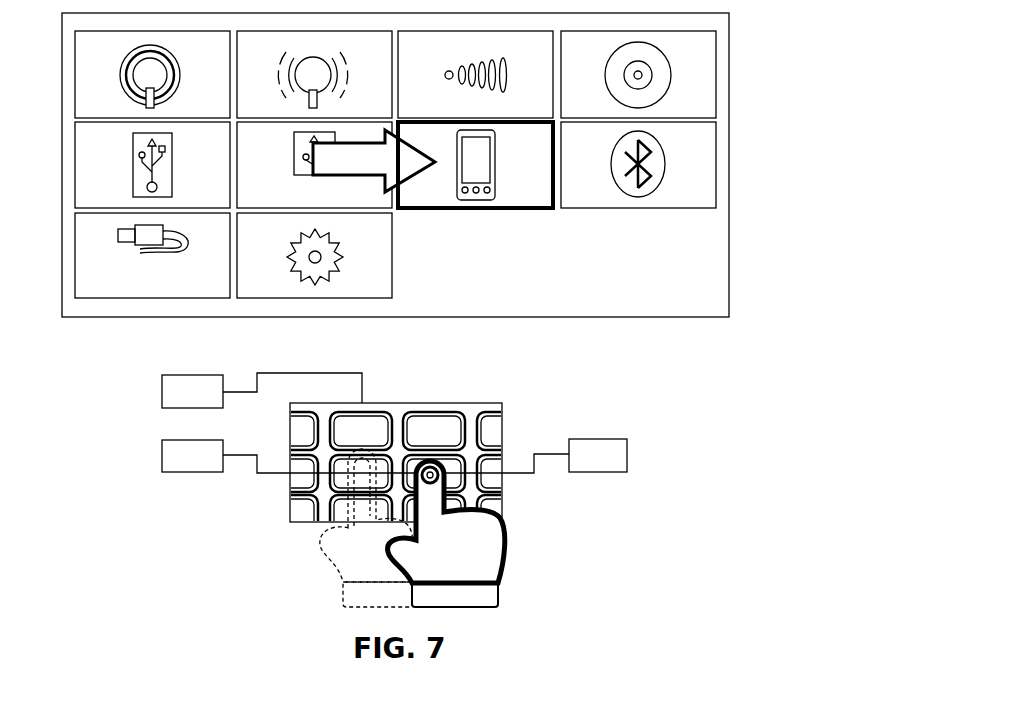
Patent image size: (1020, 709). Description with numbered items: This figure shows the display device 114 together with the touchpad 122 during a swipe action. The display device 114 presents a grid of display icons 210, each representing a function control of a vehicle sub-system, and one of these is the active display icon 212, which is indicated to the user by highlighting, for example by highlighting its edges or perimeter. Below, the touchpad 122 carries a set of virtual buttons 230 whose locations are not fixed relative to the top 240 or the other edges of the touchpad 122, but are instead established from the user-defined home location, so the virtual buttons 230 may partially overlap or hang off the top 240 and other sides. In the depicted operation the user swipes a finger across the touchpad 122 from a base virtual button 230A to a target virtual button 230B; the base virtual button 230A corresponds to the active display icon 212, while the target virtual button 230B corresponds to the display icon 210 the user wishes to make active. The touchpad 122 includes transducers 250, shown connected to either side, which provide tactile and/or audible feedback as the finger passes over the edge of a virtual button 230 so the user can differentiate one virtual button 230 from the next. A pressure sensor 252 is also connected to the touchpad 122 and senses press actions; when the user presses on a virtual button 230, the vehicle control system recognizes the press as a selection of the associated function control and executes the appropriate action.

The display device 114 is at (446, 188).
The display icon 210 is at (700, 168).
The active display icon 212 is at (508, 220).
The touchpad 122 is at (405, 467).
The top 240 is at (475, 403).
The virtual button 230 is at (298, 440).
The base virtual button 230A is at (361, 473).
The target virtual button 230B is at (434, 473).
The transducer 250 is at (192, 473).
The pressure sensor 252 is at (162, 392).